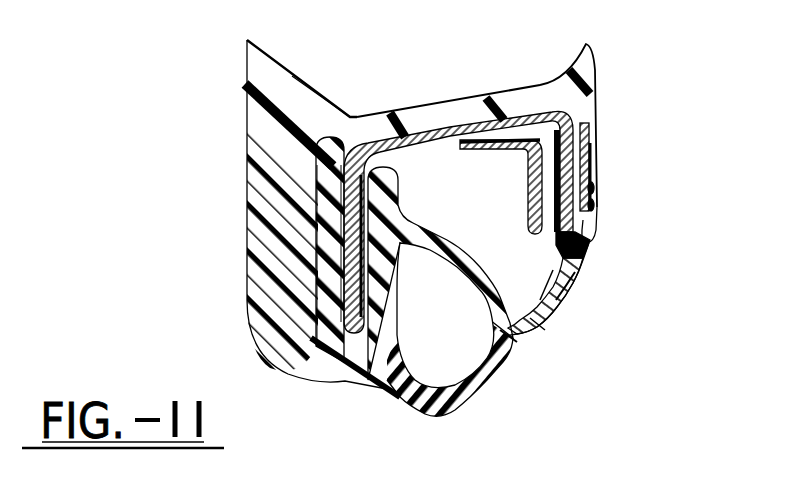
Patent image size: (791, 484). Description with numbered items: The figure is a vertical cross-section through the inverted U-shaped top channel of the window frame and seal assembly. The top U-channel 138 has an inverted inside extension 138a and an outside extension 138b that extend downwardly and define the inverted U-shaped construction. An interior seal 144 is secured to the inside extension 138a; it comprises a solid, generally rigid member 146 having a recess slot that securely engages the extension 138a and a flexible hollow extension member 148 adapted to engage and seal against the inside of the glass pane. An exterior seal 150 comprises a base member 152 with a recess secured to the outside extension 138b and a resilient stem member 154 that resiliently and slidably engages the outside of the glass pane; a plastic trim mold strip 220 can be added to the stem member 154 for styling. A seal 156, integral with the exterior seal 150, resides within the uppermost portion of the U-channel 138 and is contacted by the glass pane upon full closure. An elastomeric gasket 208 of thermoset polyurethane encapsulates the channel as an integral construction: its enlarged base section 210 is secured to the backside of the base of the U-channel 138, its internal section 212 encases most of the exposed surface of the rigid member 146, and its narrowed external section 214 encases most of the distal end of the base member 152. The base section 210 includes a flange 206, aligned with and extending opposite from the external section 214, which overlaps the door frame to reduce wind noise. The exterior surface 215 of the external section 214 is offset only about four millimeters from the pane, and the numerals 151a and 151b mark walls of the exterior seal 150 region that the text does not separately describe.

The internal section 212 is at (258, 137).
The gasket 208 is at (323, 91).
The base section 210 is at (420, 103).
The flange 206 is at (592, 50).
The top U-channel 138 is at (523, 112).
The inside extension 138a is at (341, 283).
The outside extension 138b is at (593, 168).
The mold strip 220 is at (594, 196).
The seal 156 is at (495, 152).
The exterior surface 215 is at (596, 237).
The narrowed external section 214 is at (581, 265).
The exterior seal 150 is at (540, 310).
The base member 152 is at (570, 287).
The strip inner wall 151a is at (540, 305).
The strip outer wall 151b is at (537, 320).
The resilient stem member 154 is at (503, 340).
The solid, generally rigid member 146 is at (343, 377).
The interior seal 144 is at (383, 388).
The flexible hollow extension member 148 is at (443, 420).